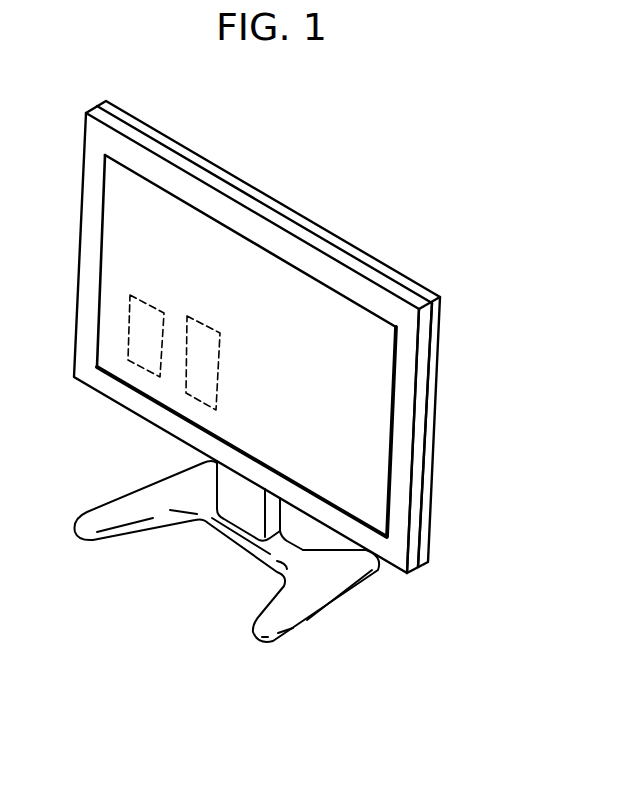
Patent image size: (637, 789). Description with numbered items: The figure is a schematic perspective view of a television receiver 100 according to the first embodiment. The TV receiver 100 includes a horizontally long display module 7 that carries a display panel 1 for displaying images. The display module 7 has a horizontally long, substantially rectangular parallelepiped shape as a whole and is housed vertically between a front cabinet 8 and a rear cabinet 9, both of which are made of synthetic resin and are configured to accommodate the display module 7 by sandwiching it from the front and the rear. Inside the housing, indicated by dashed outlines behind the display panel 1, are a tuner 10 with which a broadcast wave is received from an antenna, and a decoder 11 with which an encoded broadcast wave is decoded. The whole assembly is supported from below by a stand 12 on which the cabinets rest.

The television receiver 100 is at (385, 196).
The display panel 1 is at (337, 322).
The display module 7 is at (371, 399).
The front cabinet 8 is at (398, 498).
The rear cabinet 9 is at (433, 452).
The tuner 10 is at (145, 352).
The decoder 11 is at (200, 387).
The stand 12 is at (322, 593).